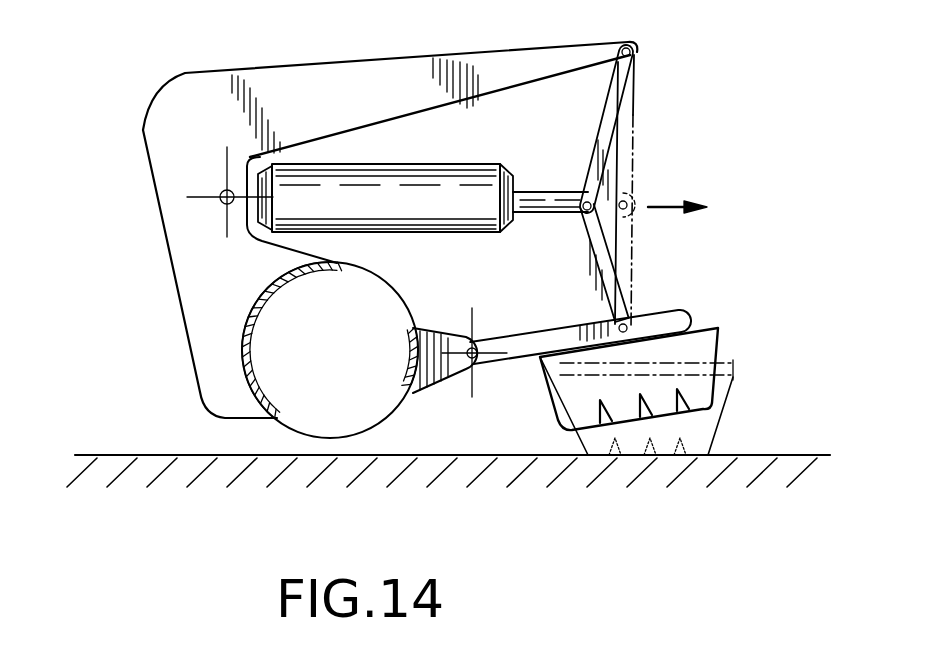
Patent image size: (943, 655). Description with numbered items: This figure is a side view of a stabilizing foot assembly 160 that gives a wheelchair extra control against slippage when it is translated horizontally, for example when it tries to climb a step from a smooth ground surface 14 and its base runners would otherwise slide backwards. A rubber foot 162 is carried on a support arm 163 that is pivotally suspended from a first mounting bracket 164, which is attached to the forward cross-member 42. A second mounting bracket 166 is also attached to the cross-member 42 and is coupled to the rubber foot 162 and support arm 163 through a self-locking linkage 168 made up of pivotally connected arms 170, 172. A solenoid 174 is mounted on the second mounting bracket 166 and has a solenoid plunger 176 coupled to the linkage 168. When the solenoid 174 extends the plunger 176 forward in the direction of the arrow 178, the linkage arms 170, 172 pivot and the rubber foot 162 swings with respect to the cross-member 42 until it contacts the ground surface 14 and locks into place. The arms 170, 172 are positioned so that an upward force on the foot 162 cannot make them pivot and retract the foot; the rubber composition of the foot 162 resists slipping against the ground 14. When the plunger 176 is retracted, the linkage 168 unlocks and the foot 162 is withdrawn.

The stabilizing foot assembly 160 is at (712, 65).
The second mounting bracket 166 is at (158, 152).
The solenoid 174 is at (385, 198).
The solenoid plunger 176 is at (541, 214).
The self-locking linkage 168 is at (570, 153).
The linkage arm 172 is at (612, 284).
The linkage arm 170 is at (627, 74).
The arrow 178 is at (677, 205).
The forward cross-member 42 is at (330, 350).
The first mounting bracket 164 is at (442, 325).
The support arm 163 is at (672, 312).
The rubber foot 162 is at (562, 397).
The smooth ground surface 14 is at (448, 485).